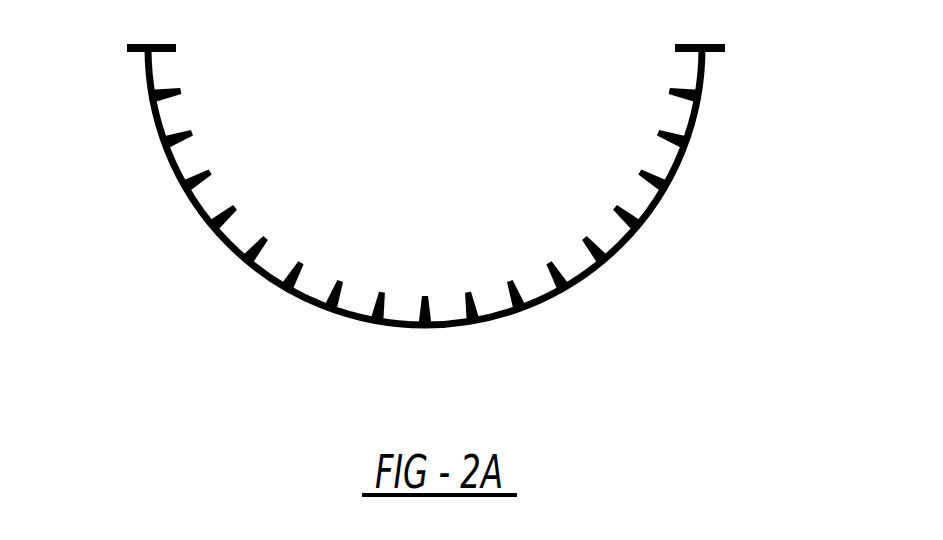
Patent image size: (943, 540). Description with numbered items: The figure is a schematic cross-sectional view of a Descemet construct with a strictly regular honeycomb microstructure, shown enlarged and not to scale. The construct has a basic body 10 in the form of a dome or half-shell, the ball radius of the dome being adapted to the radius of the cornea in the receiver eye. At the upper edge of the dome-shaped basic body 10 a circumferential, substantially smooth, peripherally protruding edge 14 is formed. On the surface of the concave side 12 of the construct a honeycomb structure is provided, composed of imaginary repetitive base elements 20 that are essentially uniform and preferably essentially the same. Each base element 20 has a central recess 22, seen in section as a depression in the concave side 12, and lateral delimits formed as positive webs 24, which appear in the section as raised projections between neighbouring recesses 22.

The basic body 10 is at (170, 165).
The concave side 12 is at (352, 140).
The peripherally protruding edge 14 is at (718, 52).
The base elements 20 is at (425, 206).
The central recess 22 is at (495, 303).
The positive webs 24 is at (476, 318).